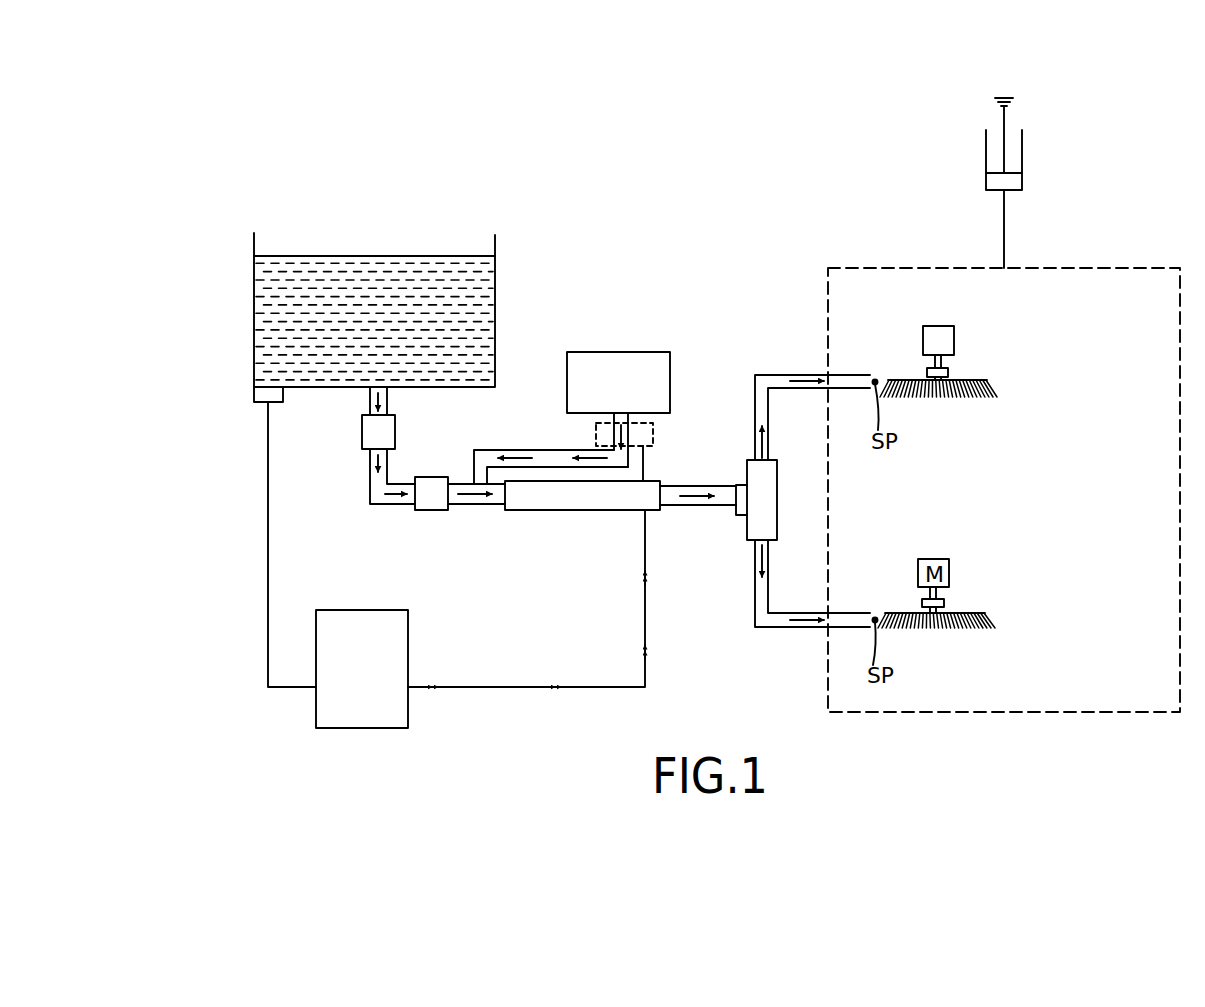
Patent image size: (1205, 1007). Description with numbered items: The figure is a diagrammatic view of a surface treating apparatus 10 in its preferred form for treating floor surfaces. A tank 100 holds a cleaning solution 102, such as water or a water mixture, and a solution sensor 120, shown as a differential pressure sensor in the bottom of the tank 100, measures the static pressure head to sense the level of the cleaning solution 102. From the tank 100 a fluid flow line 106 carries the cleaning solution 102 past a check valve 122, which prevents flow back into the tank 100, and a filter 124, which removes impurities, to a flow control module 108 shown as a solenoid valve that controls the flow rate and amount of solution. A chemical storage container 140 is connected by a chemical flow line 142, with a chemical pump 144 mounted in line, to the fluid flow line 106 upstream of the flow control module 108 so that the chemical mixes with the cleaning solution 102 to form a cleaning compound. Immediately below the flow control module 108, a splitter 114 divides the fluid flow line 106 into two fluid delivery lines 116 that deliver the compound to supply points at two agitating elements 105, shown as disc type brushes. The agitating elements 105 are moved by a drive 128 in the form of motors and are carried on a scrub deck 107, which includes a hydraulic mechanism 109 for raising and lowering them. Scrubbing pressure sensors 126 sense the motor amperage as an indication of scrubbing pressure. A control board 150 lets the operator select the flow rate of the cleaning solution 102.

The surface treating apparatus 10 is at (649, 222).
The tank 100 is at (497, 262).
The cleaning solution 102 is at (376, 256).
The agitating elements 105 is at (988, 391).
The fluid flow line 106 is at (370, 478).
The scrub deck 107 is at (910, 268).
The flow control module 108 is at (560, 511).
The mechanism 109 is at (1022, 148).
The splitter 114 is at (747, 527).
The fluid delivery lines 116 is at (812, 375).
The solution sensor 120 is at (258, 397).
The check valve 122 is at (362, 437).
The filter 124 is at (432, 511).
The scrubbing pressure sensor 126 is at (949, 371).
The drive 128 is at (970, 330).
The chemical storage container 140 is at (592, 352).
The chemical flow line 142 is at (533, 450).
The chemical pump 144 is at (653, 425).
The control board 150 is at (316, 708).